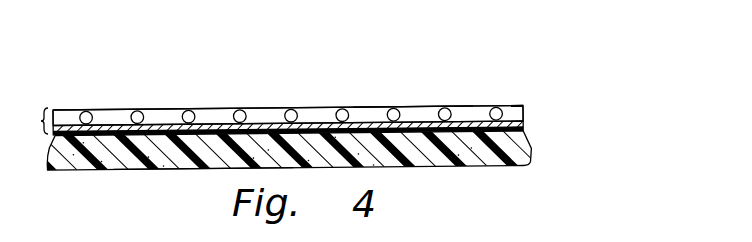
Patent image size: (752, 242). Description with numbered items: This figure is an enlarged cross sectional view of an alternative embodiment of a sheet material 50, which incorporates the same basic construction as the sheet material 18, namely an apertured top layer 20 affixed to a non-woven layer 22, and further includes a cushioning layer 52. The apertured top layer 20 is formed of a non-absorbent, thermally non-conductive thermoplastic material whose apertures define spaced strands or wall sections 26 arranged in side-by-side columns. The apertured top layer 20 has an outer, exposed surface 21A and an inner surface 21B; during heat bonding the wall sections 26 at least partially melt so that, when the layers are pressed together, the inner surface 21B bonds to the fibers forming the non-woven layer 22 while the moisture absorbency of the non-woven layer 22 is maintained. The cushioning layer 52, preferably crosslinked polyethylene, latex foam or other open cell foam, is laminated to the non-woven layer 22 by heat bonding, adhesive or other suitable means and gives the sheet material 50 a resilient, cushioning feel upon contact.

The sheet material 18 is at (37, 121).
The apertured top layer 20 is at (527, 100).
The outer exposed surface 21A is at (460, 105).
The inner surface 21B is at (461, 130).
The non-woven layer 22 is at (527, 128).
The wall sections 26 is at (187, 109).
The sheet material 50 is at (405, 97).
The cushioning layer 52 is at (194, 172).